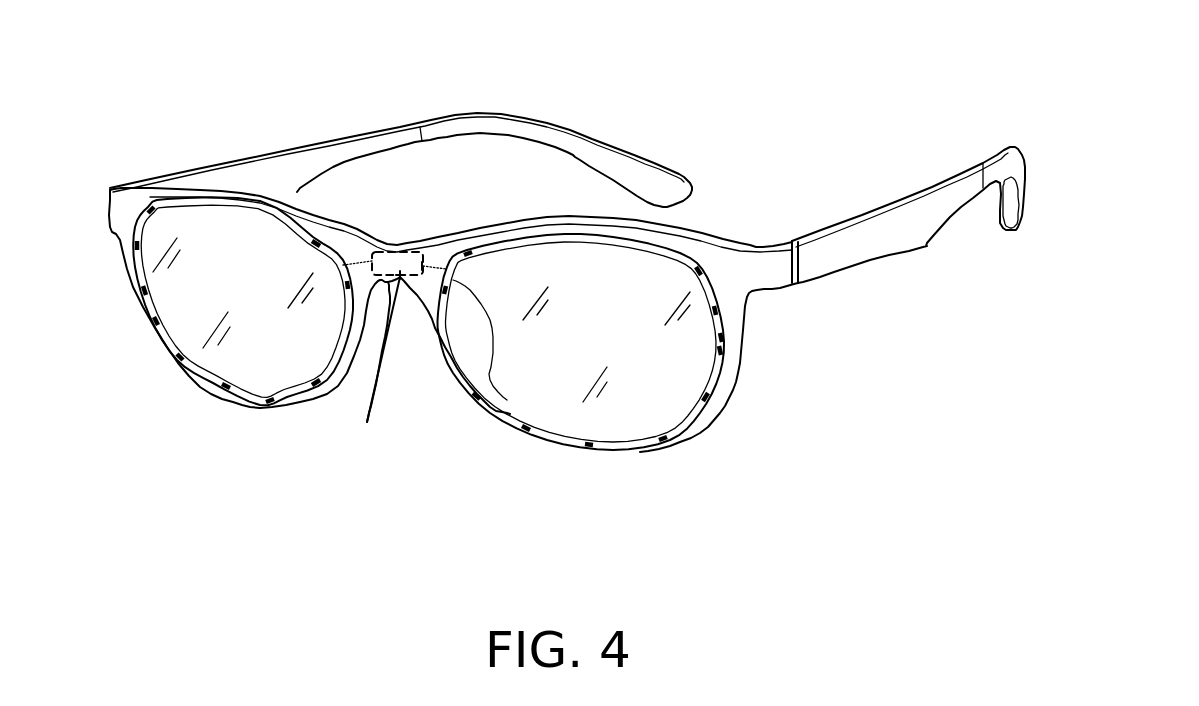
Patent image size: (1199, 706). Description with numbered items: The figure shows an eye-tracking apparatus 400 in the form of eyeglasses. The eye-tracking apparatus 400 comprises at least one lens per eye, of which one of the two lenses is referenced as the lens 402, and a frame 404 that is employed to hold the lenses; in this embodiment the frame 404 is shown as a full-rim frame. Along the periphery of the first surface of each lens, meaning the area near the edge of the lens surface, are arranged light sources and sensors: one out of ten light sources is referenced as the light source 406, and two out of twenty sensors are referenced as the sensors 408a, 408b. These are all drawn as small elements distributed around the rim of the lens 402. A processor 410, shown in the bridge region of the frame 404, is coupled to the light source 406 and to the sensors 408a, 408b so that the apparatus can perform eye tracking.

The eye-tracking apparatus 400 is at (753, 112).
The lens 402 is at (527, 373).
The frame 404 is at (833, 243).
The light source 406 is at (735, 356).
The sensor 408a is at (723, 336).
The sensor 408b is at (725, 352).
The processor 410 is at (368, 422).